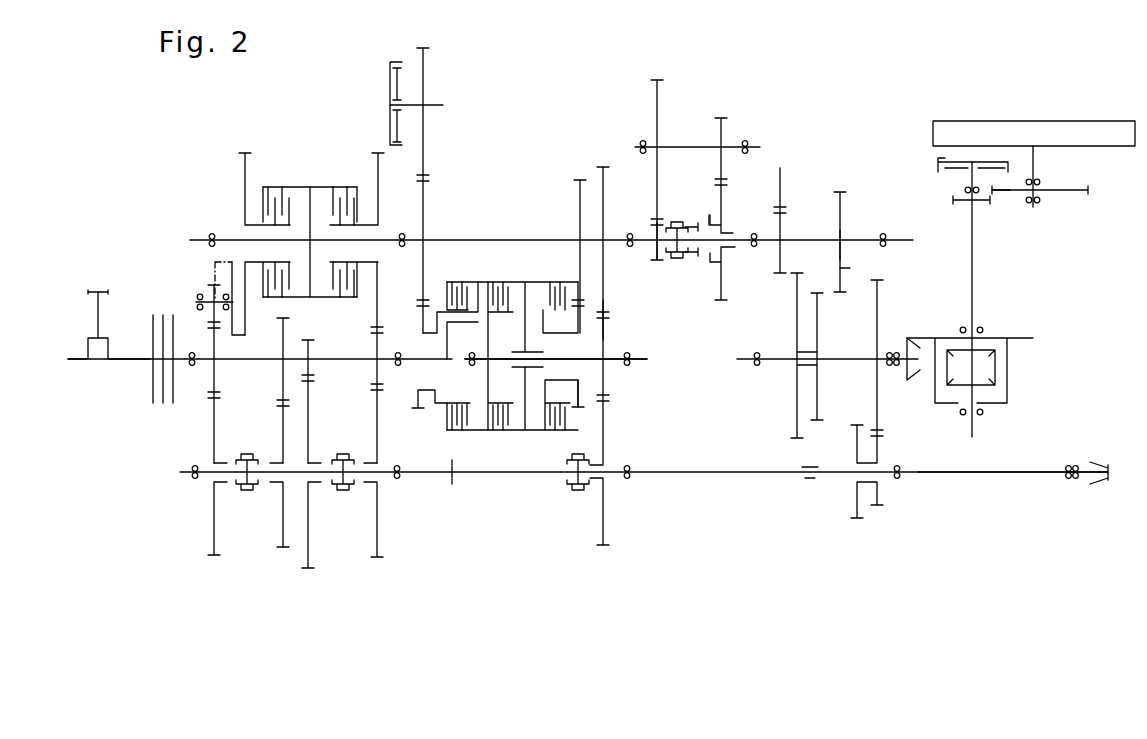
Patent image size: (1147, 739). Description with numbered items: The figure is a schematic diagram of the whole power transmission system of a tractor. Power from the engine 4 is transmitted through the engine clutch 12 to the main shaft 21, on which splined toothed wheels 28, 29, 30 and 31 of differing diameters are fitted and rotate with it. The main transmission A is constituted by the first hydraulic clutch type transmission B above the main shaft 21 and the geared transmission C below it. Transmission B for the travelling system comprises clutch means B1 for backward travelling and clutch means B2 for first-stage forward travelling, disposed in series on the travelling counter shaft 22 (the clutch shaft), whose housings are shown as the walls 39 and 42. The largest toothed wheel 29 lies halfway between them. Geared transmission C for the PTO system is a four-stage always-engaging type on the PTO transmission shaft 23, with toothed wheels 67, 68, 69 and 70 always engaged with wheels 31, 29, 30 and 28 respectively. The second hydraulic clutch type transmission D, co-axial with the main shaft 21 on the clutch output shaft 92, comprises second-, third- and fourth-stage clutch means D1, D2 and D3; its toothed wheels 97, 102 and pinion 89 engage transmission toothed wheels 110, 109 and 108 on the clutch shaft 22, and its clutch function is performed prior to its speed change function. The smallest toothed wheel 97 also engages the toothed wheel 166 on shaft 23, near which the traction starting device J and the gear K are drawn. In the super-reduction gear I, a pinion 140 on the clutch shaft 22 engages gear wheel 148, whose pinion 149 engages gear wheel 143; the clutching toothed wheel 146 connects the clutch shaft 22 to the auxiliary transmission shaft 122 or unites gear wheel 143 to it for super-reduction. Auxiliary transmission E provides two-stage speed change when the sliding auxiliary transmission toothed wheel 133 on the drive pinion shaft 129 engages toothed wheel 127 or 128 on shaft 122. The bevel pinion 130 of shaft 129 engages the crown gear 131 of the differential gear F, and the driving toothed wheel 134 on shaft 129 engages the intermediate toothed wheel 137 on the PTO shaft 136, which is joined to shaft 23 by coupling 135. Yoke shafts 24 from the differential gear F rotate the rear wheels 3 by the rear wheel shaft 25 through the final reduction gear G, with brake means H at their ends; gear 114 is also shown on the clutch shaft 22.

The rear wheels 3 is at (1054, 121).
The engine 4 is at (90, 370).
The engine clutch 12 is at (158, 408).
The main shaft 21 is at (242, 363).
The travelling counter shaft 22 is at (467, 240).
The PTO transmission shaft 23 is at (452, 474).
The deflection yoke shafts 24 is at (974, 273).
The rear wheel shaft 25 is at (1038, 163).
The toothed wheel 28 is at (215, 349).
The largest diameter toothed wheel 29 is at (290, 335).
The smallest diameter toothed wheel 30 is at (312, 352).
The toothed wheel 31 is at (380, 350).
The clutch housing wall 39 is at (245, 170).
The clutch housing wall 42 is at (378, 205).
The third-speed toothed wheel 67 is at (212, 523).
The top-speed toothed wheel 68 is at (283, 548).
The low-speed toothed wheel 69 is at (308, 568).
The second-speed toothed wheel 70 is at (378, 538).
The maximum speed pinion 89 is at (420, 390).
The clutch output shaft 92 is at (498, 361).
The smallest diameter toothed wheel 97 is at (605, 333).
The toothed wheel 102 is at (588, 385).
The transmission toothed wheel 108 is at (423, 203).
The transmission toothed wheel 109 is at (578, 200).
The transmission toothed wheel 110 is at (602, 168).
The gear 114 is at (426, 127).
The auxiliary transmission shaft 122 is at (810, 238).
The splined toothed wheel 127 is at (780, 194).
The splined toothed wheel 128 is at (842, 268).
The drive pinion shaft 129 is at (768, 359).
The bevel pinion 130 is at (909, 378).
The crown gear 131 is at (1033, 338).
The auxiliary transmission toothed wheel 133 is at (797, 412).
The driving toothed wheel 134 is at (879, 305).
The coupling 135 is at (808, 481).
The PTO shaft 136 is at (1009, 473).
The intermediate toothed wheel 137 is at (879, 497).
The pinion 140 is at (650, 253).
The gear wheel 143 is at (721, 286).
The clutching toothed wheel 146 is at (677, 260).
The gear wheel 148 is at (657, 90).
The pinion 149 is at (721, 132).
The toothed wheel 166 is at (603, 509).
The main transmission A is at (284, 135).
The first hydraulic clutch type transmission B is at (303, 183).
The clutch means for backward travelling B1 is at (274, 187).
The clutch means for first-stage forward travelling B2 is at (348, 187).
The geared transmission C is at (273, 492).
The second hydraulic clutch type transmission D is at (493, 435).
The second-stage clutch means D1 is at (520, 430).
The third-stage clutch means D2 is at (590, 412).
The fourth-stage clutch means D3 is at (447, 430).
The auxiliary transmission E is at (860, 234).
The differential gear F is at (1020, 328).
The final reduction gear G is at (1003, 208).
The brake means H is at (928, 160).
The super-reduction gear I is at (703, 104).
The traction starting device J is at (571, 493).
The gear K is at (436, 86).